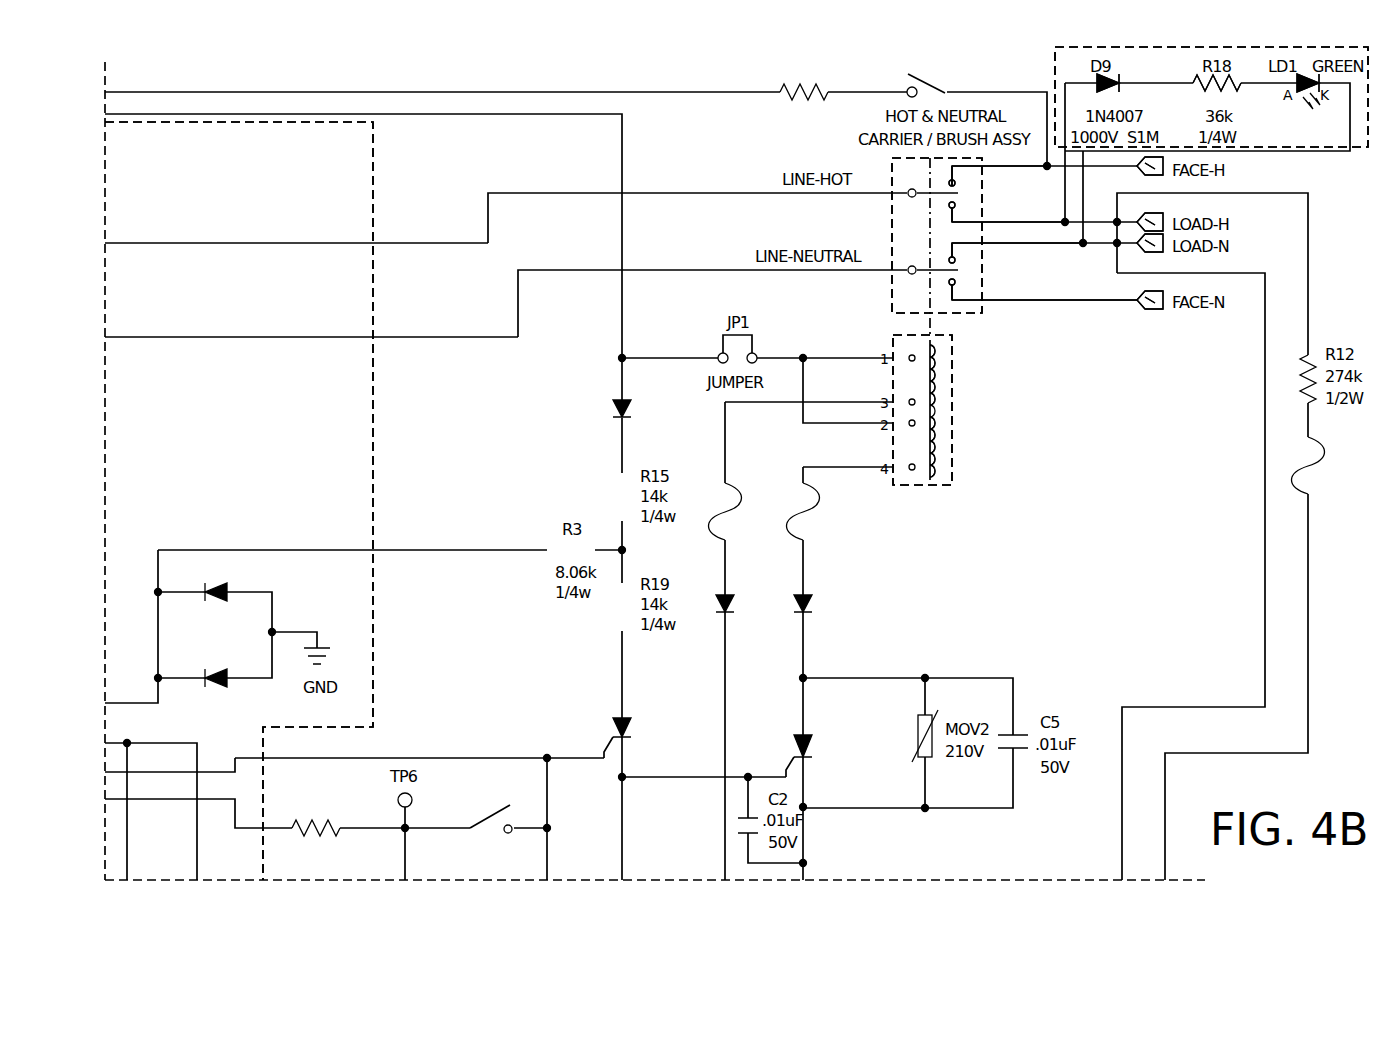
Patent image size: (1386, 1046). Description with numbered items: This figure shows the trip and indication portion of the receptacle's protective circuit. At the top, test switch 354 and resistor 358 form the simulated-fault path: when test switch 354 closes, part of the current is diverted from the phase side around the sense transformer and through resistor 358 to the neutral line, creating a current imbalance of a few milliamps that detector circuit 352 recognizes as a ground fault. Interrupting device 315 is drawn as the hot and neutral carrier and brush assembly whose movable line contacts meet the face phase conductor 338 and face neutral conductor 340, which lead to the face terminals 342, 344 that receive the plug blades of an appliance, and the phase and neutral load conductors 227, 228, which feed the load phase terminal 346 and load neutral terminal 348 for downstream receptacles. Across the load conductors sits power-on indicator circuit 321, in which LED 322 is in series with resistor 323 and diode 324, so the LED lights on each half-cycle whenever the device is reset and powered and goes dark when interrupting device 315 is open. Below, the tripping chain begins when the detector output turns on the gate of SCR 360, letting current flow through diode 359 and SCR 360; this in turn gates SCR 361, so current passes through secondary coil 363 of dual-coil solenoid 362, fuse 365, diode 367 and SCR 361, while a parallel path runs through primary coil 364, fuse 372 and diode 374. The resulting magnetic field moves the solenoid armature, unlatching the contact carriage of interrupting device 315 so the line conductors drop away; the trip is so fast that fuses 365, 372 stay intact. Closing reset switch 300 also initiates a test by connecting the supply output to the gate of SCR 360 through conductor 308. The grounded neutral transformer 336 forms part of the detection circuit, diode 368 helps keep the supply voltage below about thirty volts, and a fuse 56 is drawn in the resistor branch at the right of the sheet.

The resistor 358 is at (786, 100).
The test switch 354 is at (962, 85).
The diode 324 is at (1122, 82).
The resistor 323 is at (1194, 90).
The LED 322 is at (1281, 100).
The power-on indicator circuit 321 is at (1360, 150).
The face phase conductor 338 is at (998, 168).
The hot load conductor 227 is at (998, 222).
The face phase terminal 342 is at (1163, 172).
The load phase terminal 346 is at (1160, 218).
The load neutral terminal 348 is at (1160, 250).
The neutral load conductor 228 is at (1008, 244).
The face neutral terminal 344 is at (1152, 308).
The face neutral conductor 340 is at (1105, 300).
The interrupting device 315 is at (890, 212).
The primary coil 364 is at (948, 358).
The secondary coil 363 is at (938, 432).
The dual-coil solenoid 362 is at (948, 484).
The fuse 372 is at (735, 482).
The fuse 365 is at (830, 498).
The diode 374 is at (715, 597).
The diode 367 is at (815, 605).
The diode 359 is at (608, 412).
The detector circuit 352 is at (375, 443).
The grounded neutral transformer 336 is at (232, 586).
The diode 368 is at (235, 686).
The SCR 360 is at (608, 726).
The SCR 361 is at (790, 750).
The reset switch 300 is at (510, 792).
The conductor 308 is at (242, 836).
The fuse F1 56 is at (1319, 471).